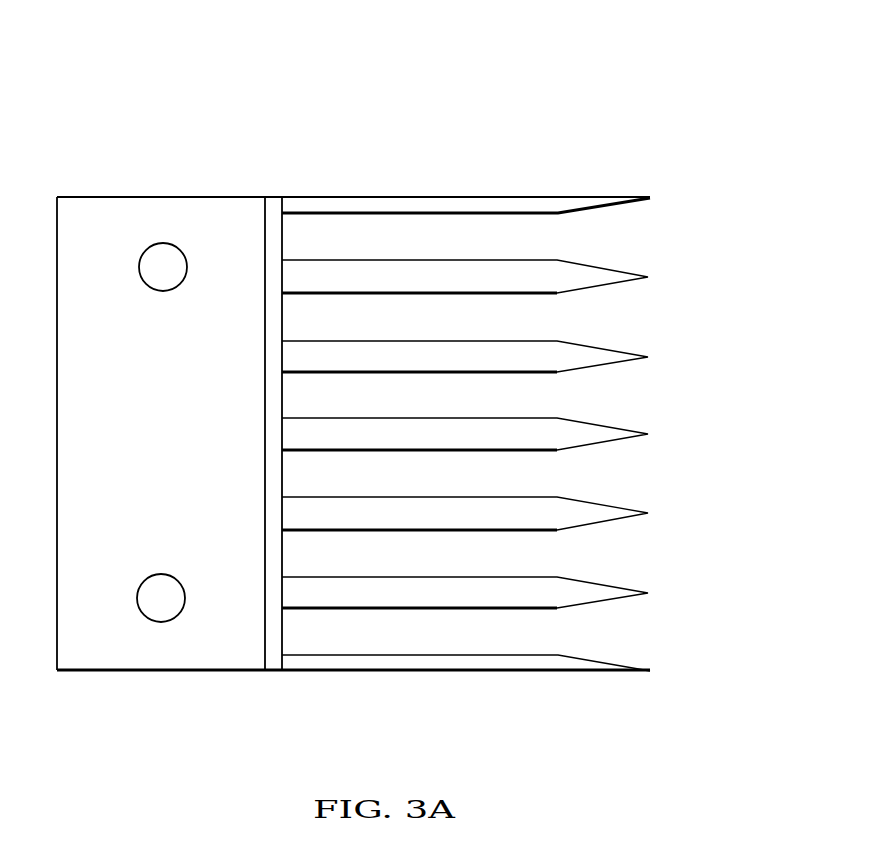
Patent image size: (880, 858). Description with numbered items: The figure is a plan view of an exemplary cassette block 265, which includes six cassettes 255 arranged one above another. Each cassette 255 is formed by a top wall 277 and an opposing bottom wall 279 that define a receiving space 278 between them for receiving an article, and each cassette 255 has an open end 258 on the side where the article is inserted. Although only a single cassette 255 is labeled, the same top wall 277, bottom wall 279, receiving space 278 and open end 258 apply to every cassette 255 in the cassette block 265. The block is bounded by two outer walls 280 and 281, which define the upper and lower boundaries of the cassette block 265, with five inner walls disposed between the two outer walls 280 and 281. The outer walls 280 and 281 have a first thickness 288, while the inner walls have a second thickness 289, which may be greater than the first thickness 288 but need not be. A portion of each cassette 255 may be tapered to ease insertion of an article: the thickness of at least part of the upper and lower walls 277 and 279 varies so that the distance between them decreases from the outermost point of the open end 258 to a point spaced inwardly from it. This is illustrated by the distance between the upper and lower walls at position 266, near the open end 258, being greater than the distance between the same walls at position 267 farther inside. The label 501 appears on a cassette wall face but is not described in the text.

The cassette block 265 is at (386, 90).
The outer wall 280 is at (492, 205).
The first thickness 288 is at (693, 160).
The position 266 is at (649, 277).
The position 267 is at (305, 293).
The second thickness 289 is at (693, 365).
The top wall 277 is at (295, 512).
The bottom wall 279 is at (295, 590).
The tooth face 501 is at (437, 592).
The outer wall 281 is at (507, 662).
The cassette 255 is at (668, 497).
The open end 258 is at (640, 640).
The receiving space 278 is at (362, 553).